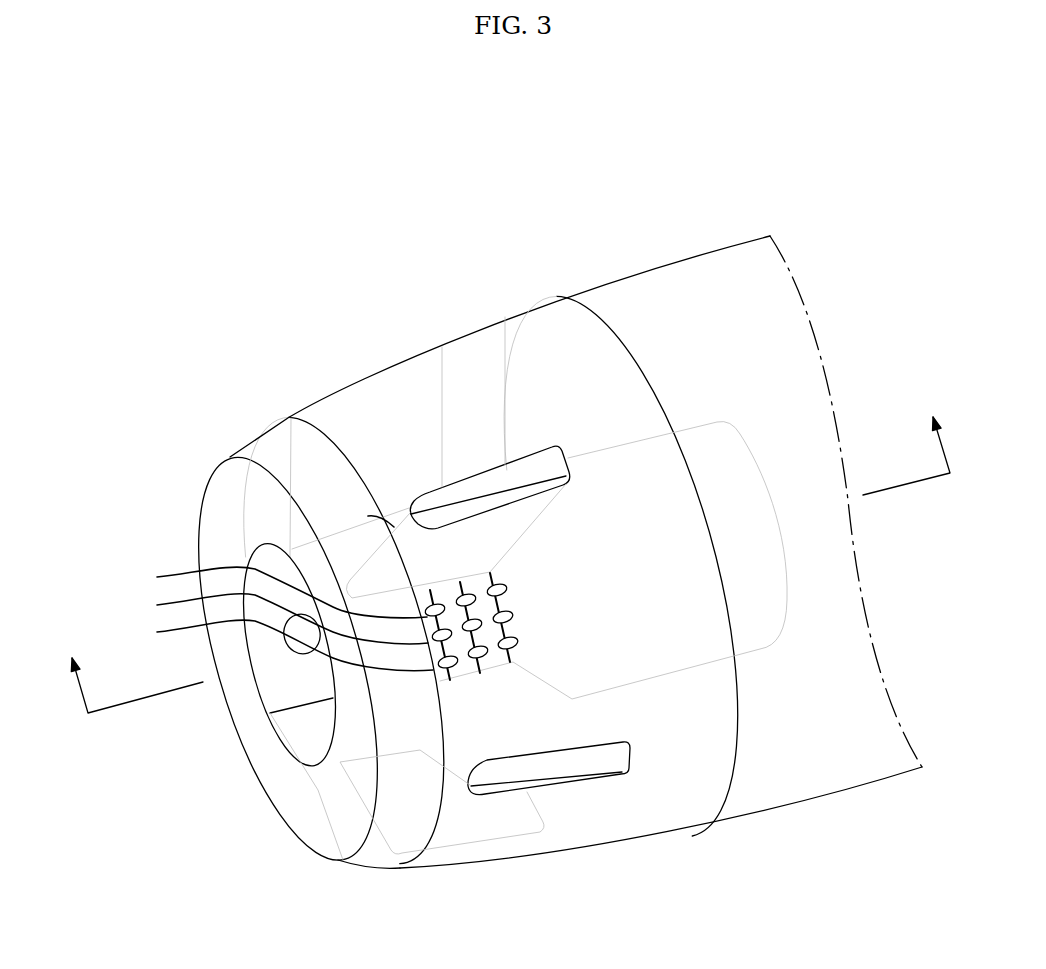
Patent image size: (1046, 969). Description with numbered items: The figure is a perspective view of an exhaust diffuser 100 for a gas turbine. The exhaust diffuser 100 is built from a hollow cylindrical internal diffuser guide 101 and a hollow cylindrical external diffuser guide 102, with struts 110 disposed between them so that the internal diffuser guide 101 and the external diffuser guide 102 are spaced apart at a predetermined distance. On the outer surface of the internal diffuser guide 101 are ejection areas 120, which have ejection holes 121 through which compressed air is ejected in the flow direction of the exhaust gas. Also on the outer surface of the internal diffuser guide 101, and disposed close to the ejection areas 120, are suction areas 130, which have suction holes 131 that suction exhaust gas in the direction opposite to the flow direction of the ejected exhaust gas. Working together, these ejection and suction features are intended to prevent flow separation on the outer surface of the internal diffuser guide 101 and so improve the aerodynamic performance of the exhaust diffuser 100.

The exhaust diffuser 100 is at (525, 146).
The internal diffuser guide 101 is at (780, 520).
The external diffuser guide 102 is at (660, 272).
The strut 110 is at (442, 378).
The ejection area 120 is at (240, 618).
The ejection hole 121 is at (112, 648).
The suction area 130 is at (542, 626).
The suction hole 131 is at (508, 589).